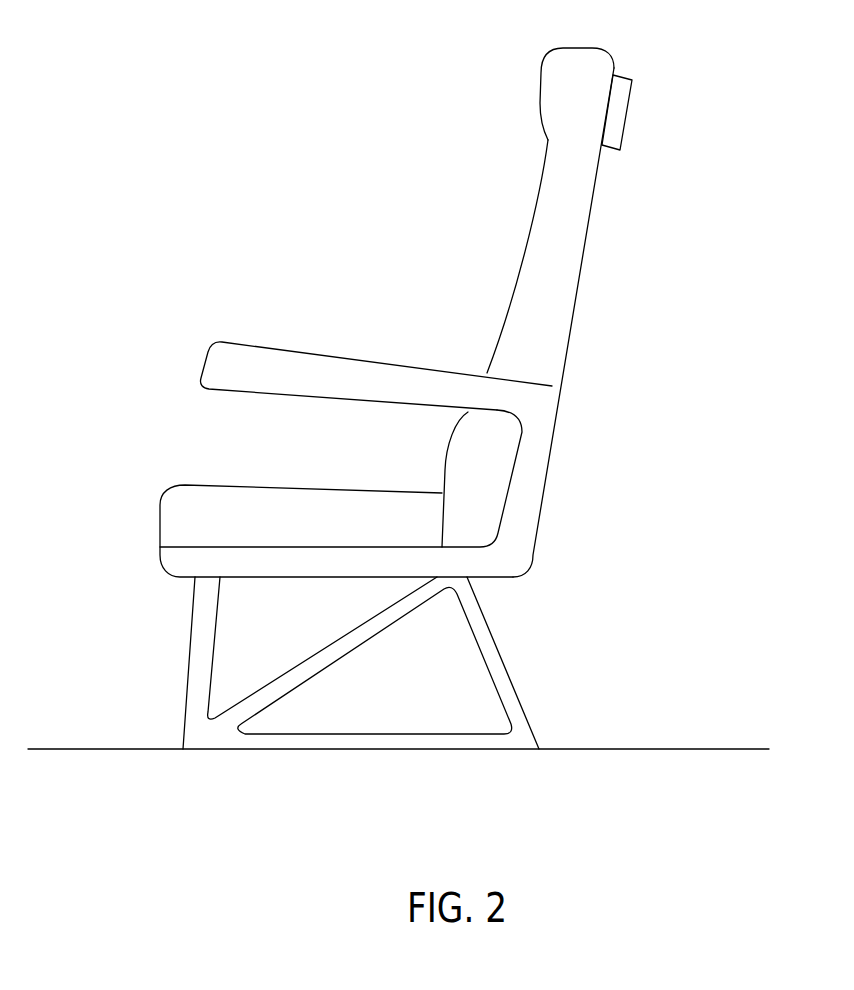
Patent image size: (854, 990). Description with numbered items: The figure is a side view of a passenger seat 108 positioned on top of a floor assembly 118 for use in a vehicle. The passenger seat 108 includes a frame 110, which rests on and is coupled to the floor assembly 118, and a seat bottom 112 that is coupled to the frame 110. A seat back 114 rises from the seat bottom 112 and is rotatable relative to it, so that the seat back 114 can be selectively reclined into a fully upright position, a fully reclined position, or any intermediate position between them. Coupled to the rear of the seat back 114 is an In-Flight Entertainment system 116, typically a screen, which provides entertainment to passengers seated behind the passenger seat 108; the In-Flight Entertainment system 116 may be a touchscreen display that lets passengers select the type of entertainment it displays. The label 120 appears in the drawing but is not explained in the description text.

The passenger seat 108 is at (200, 77).
The frame 110 is at (518, 693).
The seat bottom 112 is at (227, 485).
The seat back 114 is at (597, 46).
The In-Flight Entertainment system 116 is at (632, 118).
The floor assembly 118 is at (620, 750).
The seat back 120 is at (740, 207).